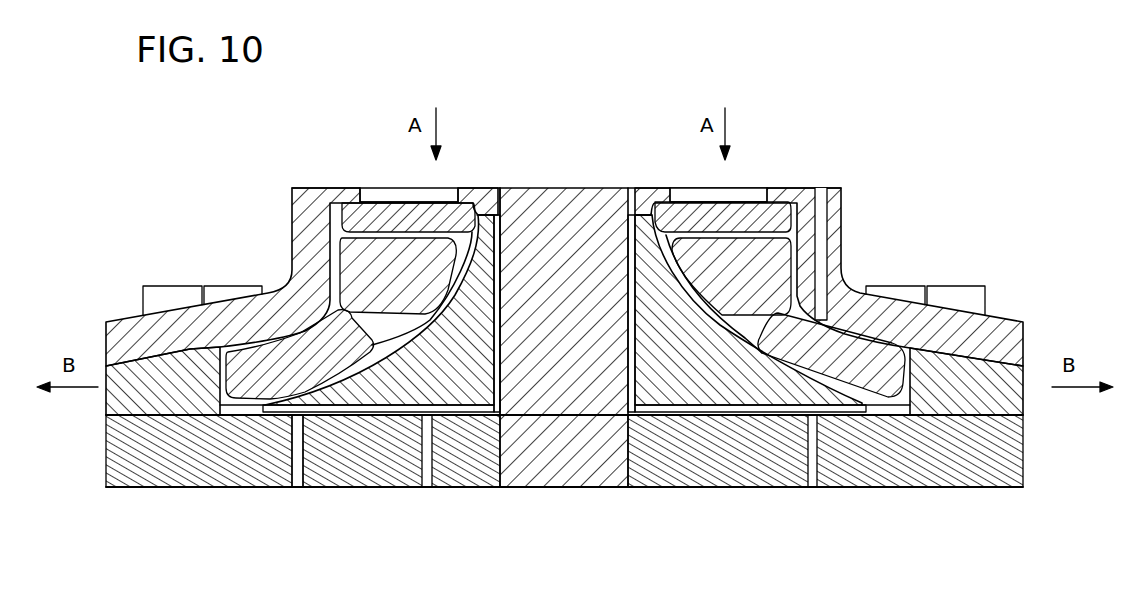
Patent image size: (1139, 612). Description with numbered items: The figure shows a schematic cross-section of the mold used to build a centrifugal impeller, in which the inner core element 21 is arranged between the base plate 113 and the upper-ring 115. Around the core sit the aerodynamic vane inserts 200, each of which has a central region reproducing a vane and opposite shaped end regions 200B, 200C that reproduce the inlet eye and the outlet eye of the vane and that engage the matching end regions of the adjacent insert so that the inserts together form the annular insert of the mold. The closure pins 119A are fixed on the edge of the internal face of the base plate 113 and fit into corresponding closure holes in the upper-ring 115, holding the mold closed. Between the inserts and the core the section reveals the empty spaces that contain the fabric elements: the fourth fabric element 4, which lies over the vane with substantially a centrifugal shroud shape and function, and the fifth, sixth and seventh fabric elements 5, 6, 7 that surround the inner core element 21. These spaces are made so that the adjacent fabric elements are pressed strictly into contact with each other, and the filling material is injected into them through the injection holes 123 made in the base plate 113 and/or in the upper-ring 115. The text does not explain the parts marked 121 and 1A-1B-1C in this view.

The base plate 113 is at (175, 457).
The central hub block 121 is at (606, 205).
The inner core element 21 is at (500, 217).
The seventh fabric element 7 is at (497, 327).
The fifth fabric element 5 is at (378, 410).
The upper-ring 115 is at (147, 330).
The injection holes 123 is at (298, 455).
The shaped end region 200C is at (407, 190).
The shaped end region 200B is at (173, 392).
The sixth fabric element 6 is at (812, 383).
The aerodynamic vane insert 200 is at (397, 217).
The seal body sections 1A-1B-1C is at (710, 235).
The fourth fabric element 4 is at (847, 340).
The closure pins 119A is at (237, 290).